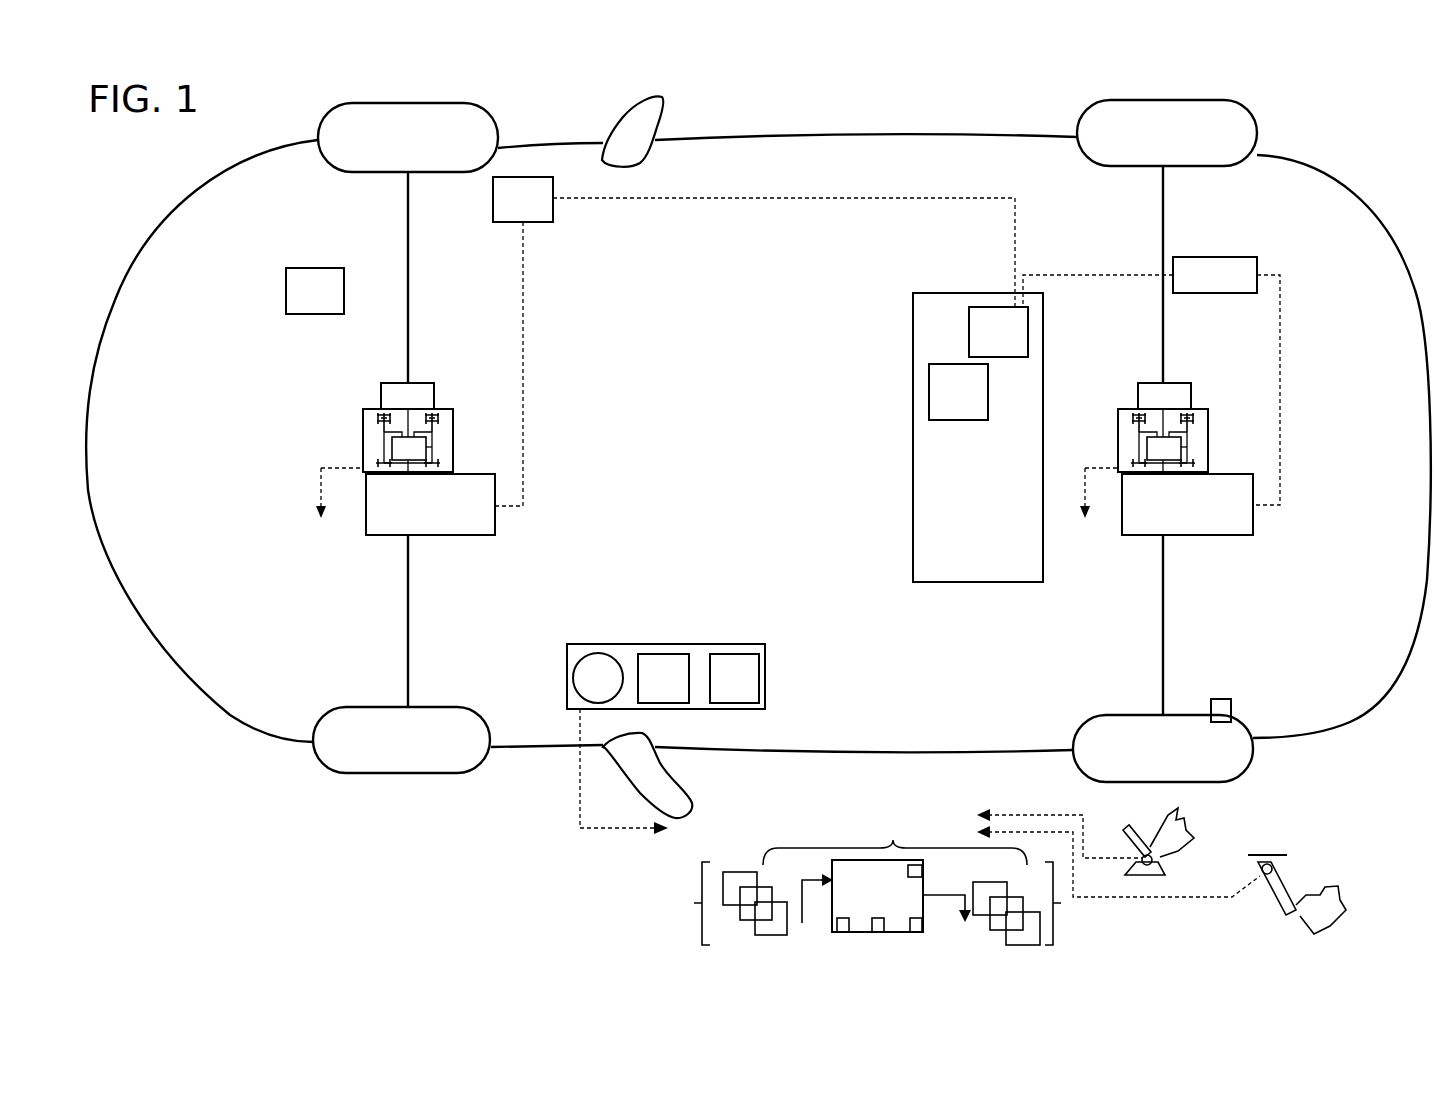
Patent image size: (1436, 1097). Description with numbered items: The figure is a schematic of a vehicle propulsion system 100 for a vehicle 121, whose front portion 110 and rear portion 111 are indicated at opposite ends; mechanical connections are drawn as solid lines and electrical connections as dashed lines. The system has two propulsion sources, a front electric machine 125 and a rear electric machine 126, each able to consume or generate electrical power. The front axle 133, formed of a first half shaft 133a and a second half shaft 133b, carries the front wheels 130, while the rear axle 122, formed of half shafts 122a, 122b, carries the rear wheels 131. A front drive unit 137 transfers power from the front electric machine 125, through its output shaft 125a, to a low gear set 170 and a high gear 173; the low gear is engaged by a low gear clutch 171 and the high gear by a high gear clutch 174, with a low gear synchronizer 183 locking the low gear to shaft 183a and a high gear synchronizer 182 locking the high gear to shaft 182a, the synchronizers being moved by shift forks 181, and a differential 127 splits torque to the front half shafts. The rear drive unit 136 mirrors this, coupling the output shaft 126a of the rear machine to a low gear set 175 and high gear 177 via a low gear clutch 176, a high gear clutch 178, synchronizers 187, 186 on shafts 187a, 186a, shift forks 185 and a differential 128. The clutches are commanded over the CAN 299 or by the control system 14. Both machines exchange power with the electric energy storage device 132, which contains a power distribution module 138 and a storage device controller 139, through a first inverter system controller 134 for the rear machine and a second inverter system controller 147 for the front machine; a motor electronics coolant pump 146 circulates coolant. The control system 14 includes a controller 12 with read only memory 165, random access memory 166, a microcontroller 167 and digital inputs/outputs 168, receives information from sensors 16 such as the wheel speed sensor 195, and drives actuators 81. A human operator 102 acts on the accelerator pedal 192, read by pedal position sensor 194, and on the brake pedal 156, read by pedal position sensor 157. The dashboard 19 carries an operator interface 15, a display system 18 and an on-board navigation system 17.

The vehicle propulsion system 100 is at (905, 113).
The front portion of vehicle 110 is at (100, 238).
The rear portion of vehicle 111 is at (1396, 182).
The vehicle 121 is at (1382, 750).
The front wheels 130 is at (430, 103).
The rear wheels 131 is at (1204, 100).
The front axle 133 is at (378, 439).
The first half shaft 133a is at (409, 268).
The second half shaft 133b is at (408, 607).
The rear axle 122 is at (1216, 440).
The first half shaft 122a is at (1164, 214).
The second half shaft 122b is at (1164, 642).
The second inverter system controller 147 is at (754, 341).
The motor electronics coolant pump 146 is at (315, 291).
The first inverter system controller 134 is at (1151, 381).
The electric energy storage device 132 is at (978, 437).
The power distribution module 138 is at (998, 332).
The electric energy storage device controller 139 is at (958, 392).
The front drive unit 137 is at (455, 461).
The rear drive unit 136 is at (1215, 465).
The differential 127 is at (407, 396).
The differential 128 is at (1164, 396).
The front electric machine 125 is at (430, 504).
The rear electric machine 126 is at (1187, 504).
The output shaft 125a is at (405, 474).
The output shaft 126a is at (1160, 474).
The low gear set 170 is at (404, 425).
The low gear set 175 is at (1160, 428).
The low gear clutch 171 is at (376, 452).
The low gear clutch 176 is at (1133, 452).
The high gear 173 is at (460, 412).
The high gear 177 is at (1216, 415).
The high gear clutch 174 is at (450, 458).
The high gear clutch 178 is at (1202, 458).
The shift forks 181 is at (415, 447).
The shift forks 185 is at (1170, 447).
The high gear synchronizer 182 is at (440, 432).
The high gear synchronizer 186 is at (1195, 432).
The shaft 182a is at (440, 438).
The shaft 186a is at (1195, 438).
The low gear synchronizer 183 is at (382, 430).
The low gear synchronizer 187 is at (1137, 430).
The shaft 183a is at (388, 442).
The shaft 187a is at (1143, 442).
The CAN 299 is at (339, 512).
The dashboard 19 is at (666, 719).
The operator interface 15 is at (598, 678).
The display system 18 is at (663, 678).
The on-board navigation system 17 is at (734, 678).
The wheel speed sensor 195 is at (1225, 699).
The control system 14 is at (883, 880).
The controller 12 is at (877, 896).
The sensors 16 is at (724, 903).
The actuators 81 is at (1037, 903).
The non-transitory memory 165 is at (840, 927).
The random access memory 166 is at (876, 929).
The microcontroller 167 is at (915, 929).
The digital inputs/outputs 168 is at (922, 871).
The pedal 192 is at (1093, 832).
The pedal position sensor 194 is at (1155, 858).
The human operator 102 is at (1160, 830).
The pedal position sensor 157 is at (1136, 884).
The brake pedal 156 is at (1286, 918).